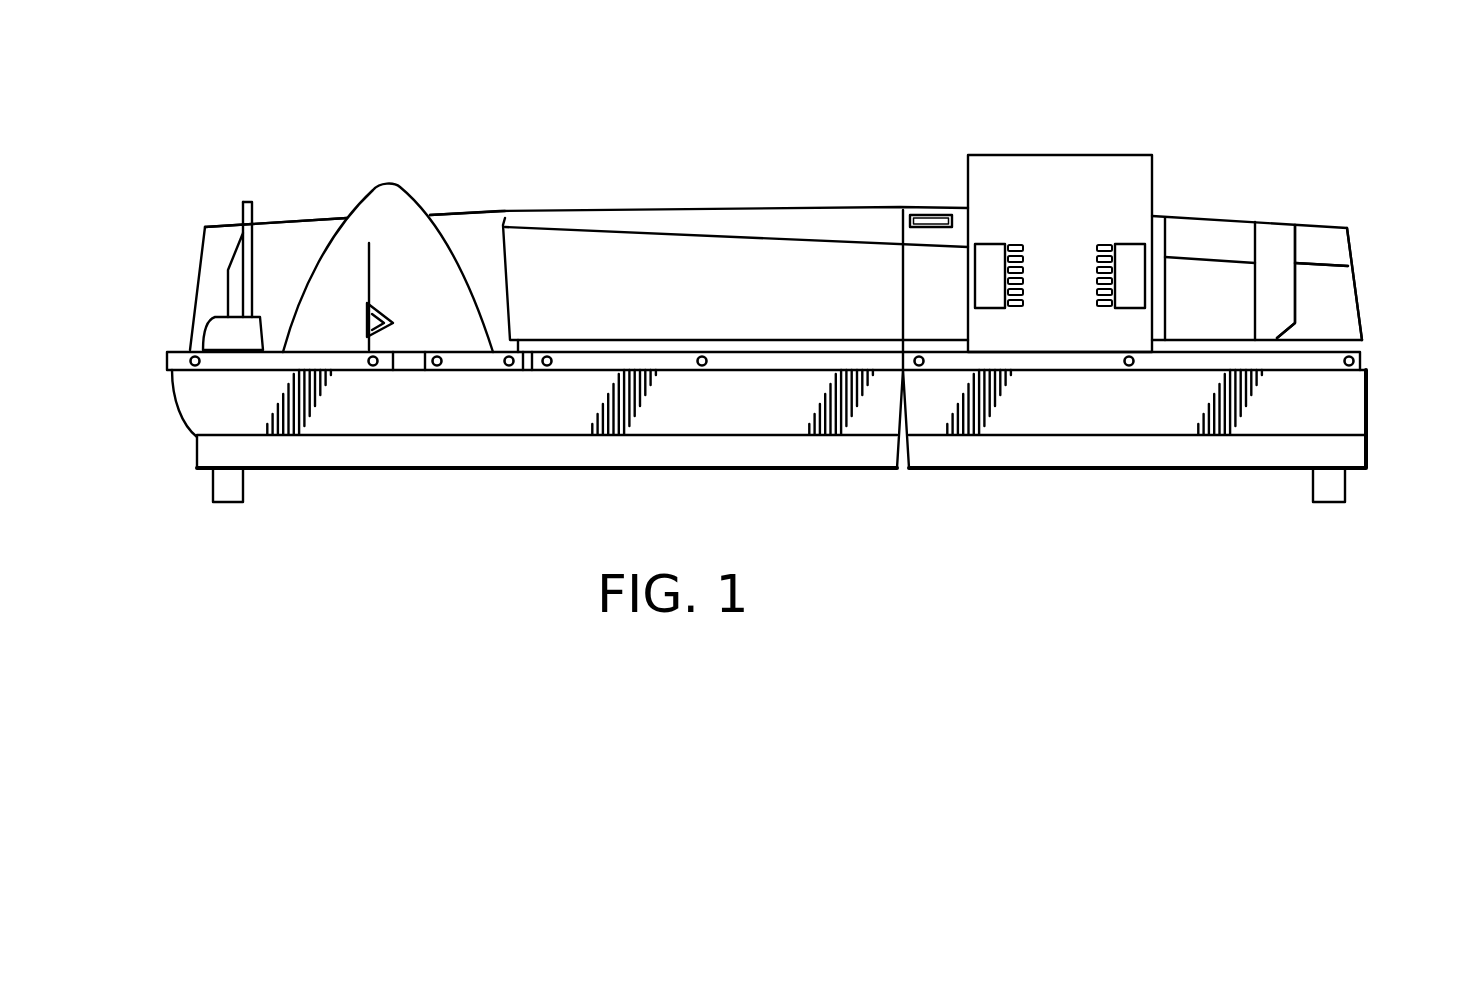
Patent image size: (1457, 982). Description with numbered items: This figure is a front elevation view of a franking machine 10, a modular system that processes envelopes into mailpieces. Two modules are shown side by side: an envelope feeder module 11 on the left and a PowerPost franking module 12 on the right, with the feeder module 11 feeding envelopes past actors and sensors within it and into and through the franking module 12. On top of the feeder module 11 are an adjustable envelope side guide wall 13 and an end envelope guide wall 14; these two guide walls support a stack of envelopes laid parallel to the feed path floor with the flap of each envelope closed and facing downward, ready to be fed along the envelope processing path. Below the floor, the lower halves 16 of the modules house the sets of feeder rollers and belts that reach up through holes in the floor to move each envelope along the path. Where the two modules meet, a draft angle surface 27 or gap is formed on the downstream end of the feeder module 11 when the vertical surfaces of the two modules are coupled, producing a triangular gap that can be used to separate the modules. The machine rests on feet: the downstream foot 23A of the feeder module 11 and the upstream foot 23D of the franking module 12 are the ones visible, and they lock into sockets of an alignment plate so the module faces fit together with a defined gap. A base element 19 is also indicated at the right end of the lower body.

The franking machine 10 is at (697, 182).
The envelope feeder module 11 is at (467, 213).
The franking module 12 is at (930, 213).
The adjustable envelope side guide wall 13 is at (357, 205).
The end envelope guide wall 14 is at (230, 260).
The lower half 16 is at (1328, 303).
The base frame 19 is at (1367, 413).
The downstream foot 23A is at (231, 503).
The upstream foot 23D is at (1331, 503).
The draft angle surface 27 is at (901, 455).